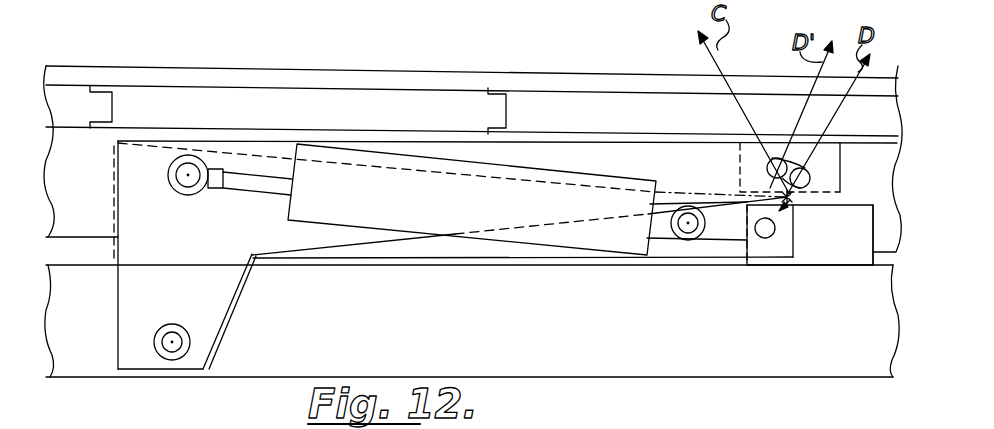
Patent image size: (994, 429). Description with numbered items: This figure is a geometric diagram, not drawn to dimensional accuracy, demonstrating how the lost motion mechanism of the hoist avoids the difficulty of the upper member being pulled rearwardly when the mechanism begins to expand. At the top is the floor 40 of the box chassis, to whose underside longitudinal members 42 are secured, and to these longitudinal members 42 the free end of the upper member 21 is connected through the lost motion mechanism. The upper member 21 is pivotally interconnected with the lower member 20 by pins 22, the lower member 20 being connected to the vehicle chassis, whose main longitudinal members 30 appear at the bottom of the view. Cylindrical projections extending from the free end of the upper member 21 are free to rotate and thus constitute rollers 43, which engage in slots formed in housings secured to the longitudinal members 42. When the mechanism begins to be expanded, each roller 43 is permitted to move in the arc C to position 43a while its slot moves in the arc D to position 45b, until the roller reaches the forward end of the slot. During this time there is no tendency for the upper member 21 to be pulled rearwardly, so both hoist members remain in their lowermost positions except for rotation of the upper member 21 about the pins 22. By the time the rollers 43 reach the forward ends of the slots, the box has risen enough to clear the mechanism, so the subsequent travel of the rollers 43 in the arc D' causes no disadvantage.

The floor 40 is at (343, 72).
The longitudinal members 42 is at (78, 134).
The upper member 21 is at (594, 148).
The pins 22 is at (176, 345).
The lower member 20 is at (673, 245).
The rollers 43 is at (798, 202).
The roller position 43a is at (766, 170).
The slot position 45b is at (811, 178).
The main longitudinal members 30 is at (765, 363).